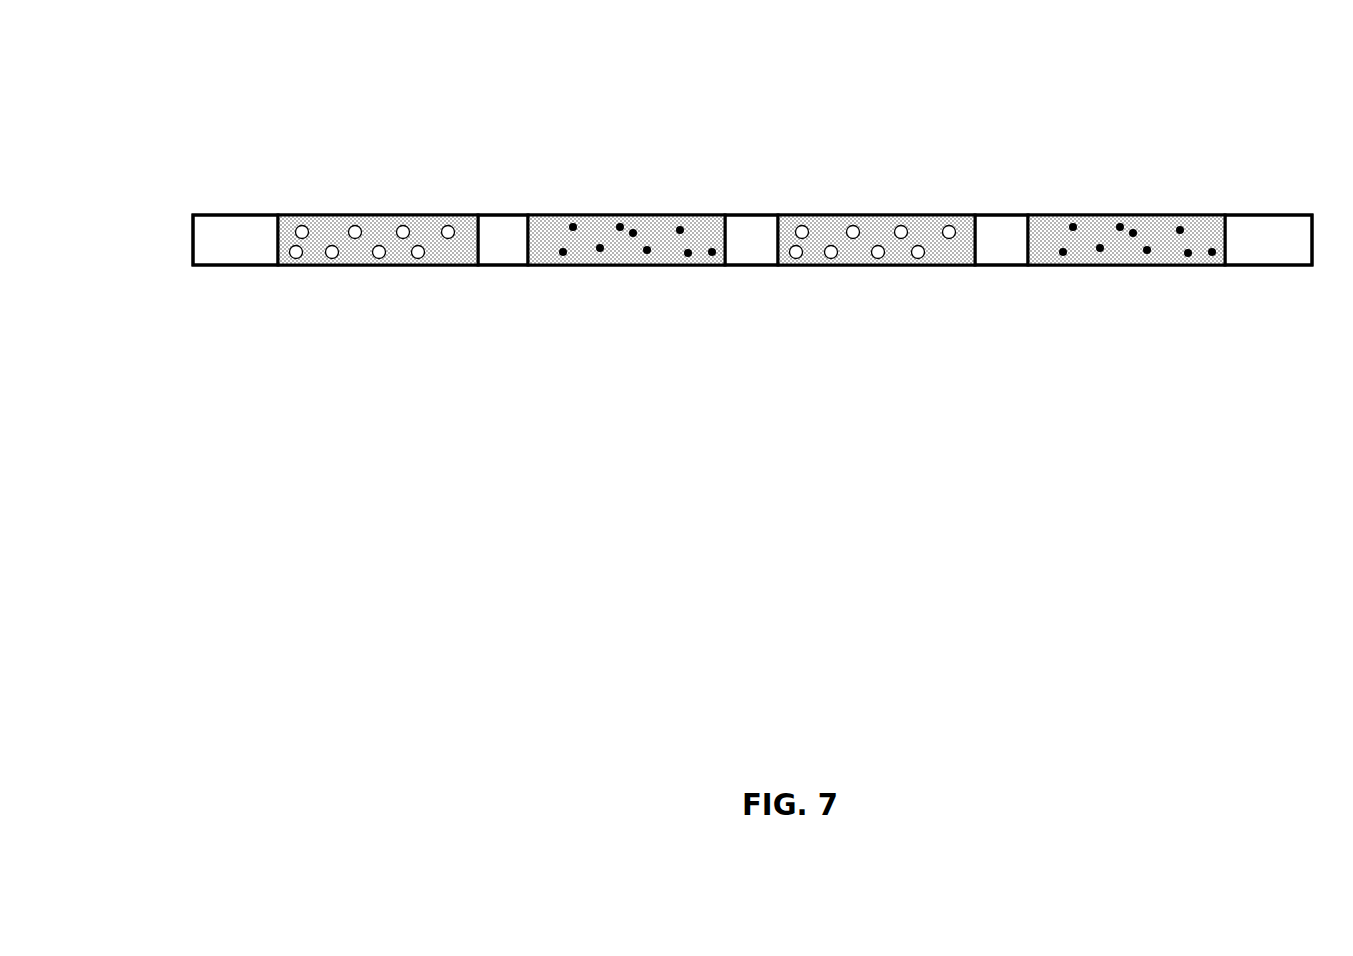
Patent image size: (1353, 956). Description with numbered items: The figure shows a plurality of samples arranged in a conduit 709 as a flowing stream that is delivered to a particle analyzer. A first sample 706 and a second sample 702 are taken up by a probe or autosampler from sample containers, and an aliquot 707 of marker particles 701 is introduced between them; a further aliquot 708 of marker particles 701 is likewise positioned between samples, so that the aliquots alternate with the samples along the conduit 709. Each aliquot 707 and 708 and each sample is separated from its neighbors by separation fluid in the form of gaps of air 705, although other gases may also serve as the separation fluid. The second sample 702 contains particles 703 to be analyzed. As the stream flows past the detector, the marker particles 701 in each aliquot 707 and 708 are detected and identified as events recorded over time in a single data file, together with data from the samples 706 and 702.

The marker particles 701 is at (645, 254).
The second sample 702 is at (395, 215).
The light-scattering particles 703 is at (353, 225).
The gaps of air 705 is at (233, 264).
The first sample 706 is at (868, 215).
The aliquot of marker particles 707 is at (622, 215).
The aliquot of marker particles 708 is at (1107, 215).
The conduit 709 is at (178, 205).